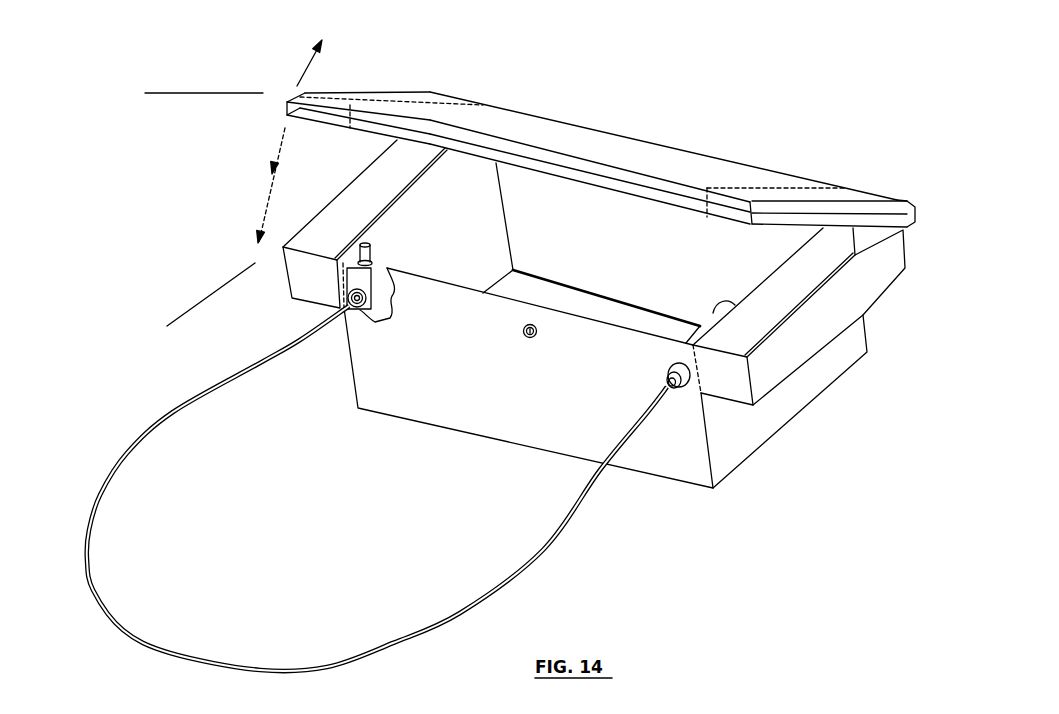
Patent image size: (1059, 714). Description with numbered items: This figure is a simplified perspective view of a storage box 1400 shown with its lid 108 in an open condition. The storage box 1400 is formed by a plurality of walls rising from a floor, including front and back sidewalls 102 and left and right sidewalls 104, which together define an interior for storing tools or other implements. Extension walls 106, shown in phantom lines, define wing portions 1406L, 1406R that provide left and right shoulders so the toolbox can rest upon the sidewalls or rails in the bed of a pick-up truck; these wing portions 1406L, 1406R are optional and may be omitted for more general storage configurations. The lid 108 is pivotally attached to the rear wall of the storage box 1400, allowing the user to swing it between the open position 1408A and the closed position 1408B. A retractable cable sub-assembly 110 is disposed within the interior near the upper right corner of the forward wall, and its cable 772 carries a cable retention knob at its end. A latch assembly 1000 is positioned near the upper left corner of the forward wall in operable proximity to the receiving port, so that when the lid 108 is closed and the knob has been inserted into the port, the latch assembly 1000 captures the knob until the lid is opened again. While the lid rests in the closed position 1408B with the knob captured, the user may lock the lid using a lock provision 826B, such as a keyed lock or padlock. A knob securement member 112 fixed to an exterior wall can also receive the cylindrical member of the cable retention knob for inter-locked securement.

The storage box 1400 is at (513, 346).
The lid 108 is at (612, 124).
The left wing portion 1406L is at (456, 86).
The right wing portion 1406R is at (897, 191).
The open position 1408A is at (162, 94).
The closed position 1408B is at (183, 312).
The front and back sidewalls 102 is at (539, 325).
The left and right sidewalls 104 is at (828, 391).
The extension walls 106 is at (841, 327).
The retractable cable sub-assembly 110 is at (700, 326).
The knob securement member 112 is at (677, 390).
The lock provision 826B is at (533, 338).
The latch assembly 1000 is at (395, 250).
The cable 772 is at (540, 552).